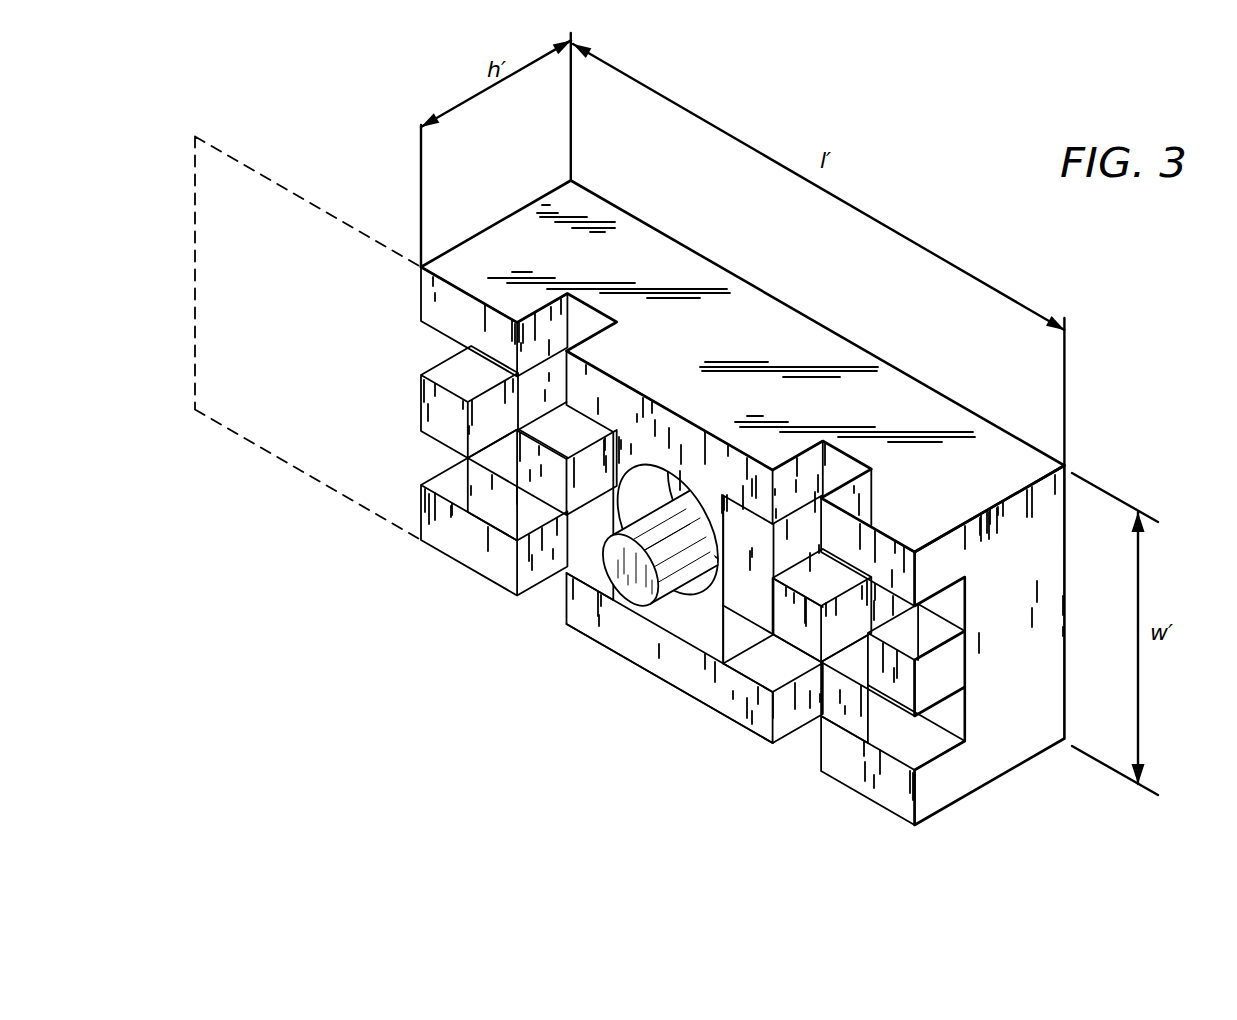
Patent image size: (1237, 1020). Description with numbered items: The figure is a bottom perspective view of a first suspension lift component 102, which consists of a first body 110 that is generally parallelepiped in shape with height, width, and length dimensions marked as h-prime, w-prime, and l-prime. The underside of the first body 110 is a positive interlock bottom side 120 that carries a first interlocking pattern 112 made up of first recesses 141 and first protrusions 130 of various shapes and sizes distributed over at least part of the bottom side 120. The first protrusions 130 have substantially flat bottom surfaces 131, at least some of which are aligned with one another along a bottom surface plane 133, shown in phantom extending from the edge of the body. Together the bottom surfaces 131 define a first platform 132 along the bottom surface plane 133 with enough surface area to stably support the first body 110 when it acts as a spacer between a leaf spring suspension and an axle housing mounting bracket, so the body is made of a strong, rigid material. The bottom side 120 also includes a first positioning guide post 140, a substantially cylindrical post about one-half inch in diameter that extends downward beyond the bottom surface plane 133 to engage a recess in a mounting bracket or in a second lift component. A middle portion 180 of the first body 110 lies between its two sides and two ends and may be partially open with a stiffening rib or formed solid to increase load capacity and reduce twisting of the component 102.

The first suspension lift component 102 is at (808, 276).
The first body 110 is at (893, 380).
The first interlocking pattern 112 is at (466, 412).
The positive interlock bottom side 120 is at (470, 618).
The first protrusions 130 is at (655, 393).
The bottom surfaces 131 is at (710, 698).
The first platform 132 is at (441, 308).
The bottom surface plane 133 is at (292, 272).
The first positioning guide post 140 is at (677, 542).
The first recesses 141 is at (600, 447).
The middle portion 180 is at (750, 567).